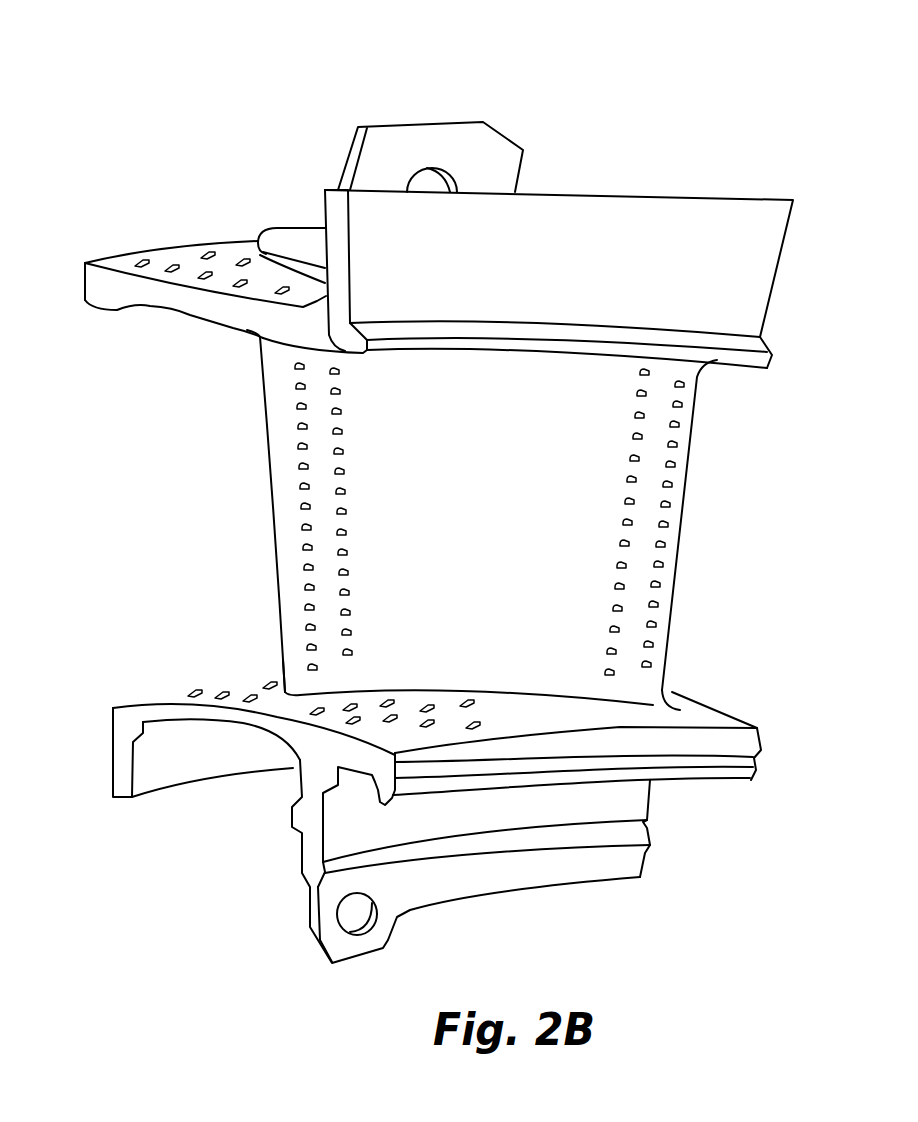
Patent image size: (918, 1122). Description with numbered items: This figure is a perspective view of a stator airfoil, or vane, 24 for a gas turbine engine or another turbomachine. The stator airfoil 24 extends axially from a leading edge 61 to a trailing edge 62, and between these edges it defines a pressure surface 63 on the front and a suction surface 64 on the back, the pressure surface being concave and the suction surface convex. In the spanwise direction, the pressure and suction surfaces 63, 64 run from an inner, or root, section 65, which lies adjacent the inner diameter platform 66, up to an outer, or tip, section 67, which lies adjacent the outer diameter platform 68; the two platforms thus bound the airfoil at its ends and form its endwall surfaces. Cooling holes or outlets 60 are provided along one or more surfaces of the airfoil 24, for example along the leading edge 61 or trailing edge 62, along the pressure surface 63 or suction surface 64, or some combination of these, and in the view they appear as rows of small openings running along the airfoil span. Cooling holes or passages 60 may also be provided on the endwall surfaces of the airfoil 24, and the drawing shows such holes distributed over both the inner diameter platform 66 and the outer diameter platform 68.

The stator airfoil 24 is at (112, 105).
The cooling holes 60 is at (212, 250).
The leading edge 61 is at (260, 400).
The trailing edge 62 is at (675, 582).
The pressure surface 63 is at (392, 526).
The suction surface 64 is at (693, 516).
The inner section 65 is at (300, 673).
The ID platform 66 is at (747, 738).
The outer section 67 is at (275, 357).
The OD platform 68 is at (102, 293).